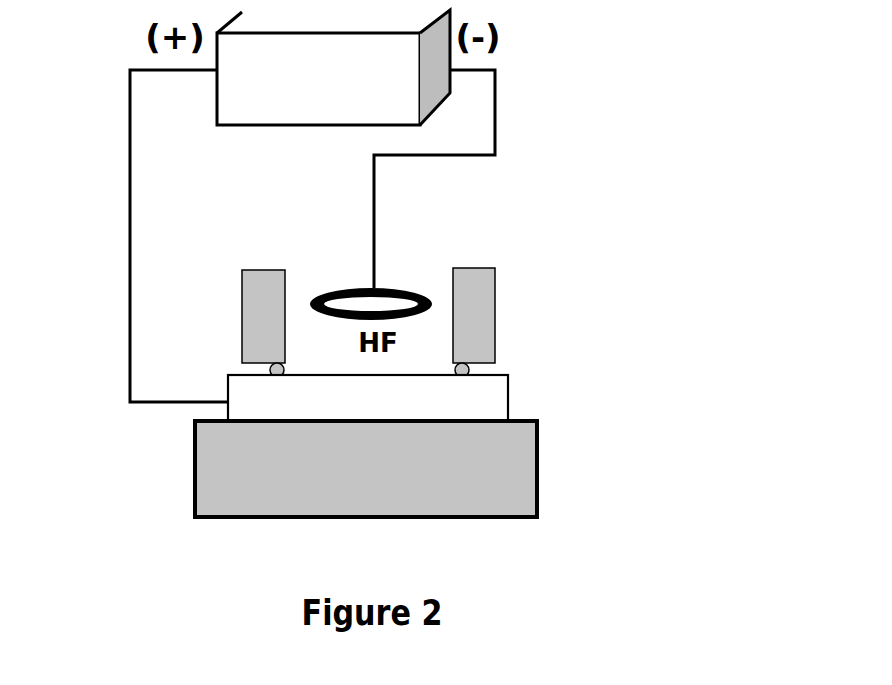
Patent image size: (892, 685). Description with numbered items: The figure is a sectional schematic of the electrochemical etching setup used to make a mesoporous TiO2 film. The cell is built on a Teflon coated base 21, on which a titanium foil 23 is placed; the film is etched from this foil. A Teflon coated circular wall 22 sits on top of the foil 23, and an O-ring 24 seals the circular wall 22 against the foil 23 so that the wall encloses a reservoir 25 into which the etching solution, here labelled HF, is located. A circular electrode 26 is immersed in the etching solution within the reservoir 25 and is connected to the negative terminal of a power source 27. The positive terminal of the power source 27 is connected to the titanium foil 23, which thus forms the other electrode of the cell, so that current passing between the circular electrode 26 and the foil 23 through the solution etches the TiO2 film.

The Teflon coated base 21 is at (503, 485).
The Teflon coated circular wall 22 is at (493, 322).
The titanium foil 23 is at (260, 402).
The O-ring 24 is at (272, 372).
The reservoir 25 is at (325, 347).
The circular electrode 26 is at (397, 287).
The power source 27 is at (252, 108).